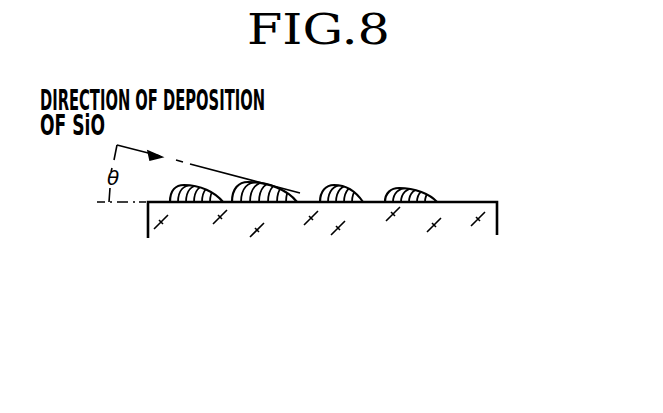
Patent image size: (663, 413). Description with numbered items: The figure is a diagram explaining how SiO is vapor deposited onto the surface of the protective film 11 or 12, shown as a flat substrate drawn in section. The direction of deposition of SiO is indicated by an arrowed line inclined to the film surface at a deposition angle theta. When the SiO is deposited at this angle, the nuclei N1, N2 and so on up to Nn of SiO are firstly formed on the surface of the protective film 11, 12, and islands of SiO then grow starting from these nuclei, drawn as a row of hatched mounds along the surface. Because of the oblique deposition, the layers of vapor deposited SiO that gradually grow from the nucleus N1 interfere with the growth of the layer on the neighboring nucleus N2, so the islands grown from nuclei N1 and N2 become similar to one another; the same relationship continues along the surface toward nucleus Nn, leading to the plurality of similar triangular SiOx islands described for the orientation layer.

The protective film 11 is at (360, 221).
The protective film 12 is at (497, 220).
The nucleus N1 is at (223, 203).
The nucleus N2 is at (292, 203).
The nucleus Nn is at (432, 202).